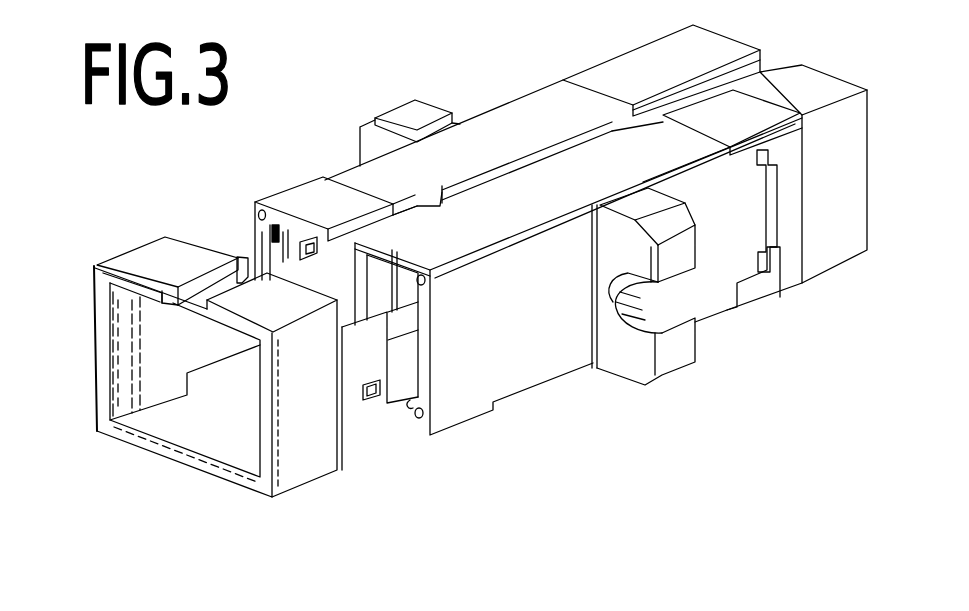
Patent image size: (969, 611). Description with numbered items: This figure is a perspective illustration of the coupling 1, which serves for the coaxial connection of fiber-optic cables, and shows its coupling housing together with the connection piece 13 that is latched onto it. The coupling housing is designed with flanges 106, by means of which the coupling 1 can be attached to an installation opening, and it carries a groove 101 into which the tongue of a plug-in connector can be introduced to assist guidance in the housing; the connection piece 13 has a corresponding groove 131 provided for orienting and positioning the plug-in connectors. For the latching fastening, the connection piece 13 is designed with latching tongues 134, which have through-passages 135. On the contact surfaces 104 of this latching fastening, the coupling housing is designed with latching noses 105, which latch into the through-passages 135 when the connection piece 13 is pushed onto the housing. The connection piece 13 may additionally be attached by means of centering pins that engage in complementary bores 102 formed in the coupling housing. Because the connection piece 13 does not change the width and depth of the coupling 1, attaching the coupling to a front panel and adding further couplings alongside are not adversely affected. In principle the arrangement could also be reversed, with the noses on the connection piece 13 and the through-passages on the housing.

The coupling 1 is at (381, 96).
The connection piece 13 is at (153, 457).
The groove 101 is at (715, 72).
The bores 102 is at (256, 215).
The contact surfaces 104 is at (284, 263).
The latching noses 105 is at (309, 247).
The flanges 106 is at (413, 117).
The groove 131 is at (192, 290).
The latching tongues 134 is at (353, 370).
The through-passages 135 is at (370, 390).